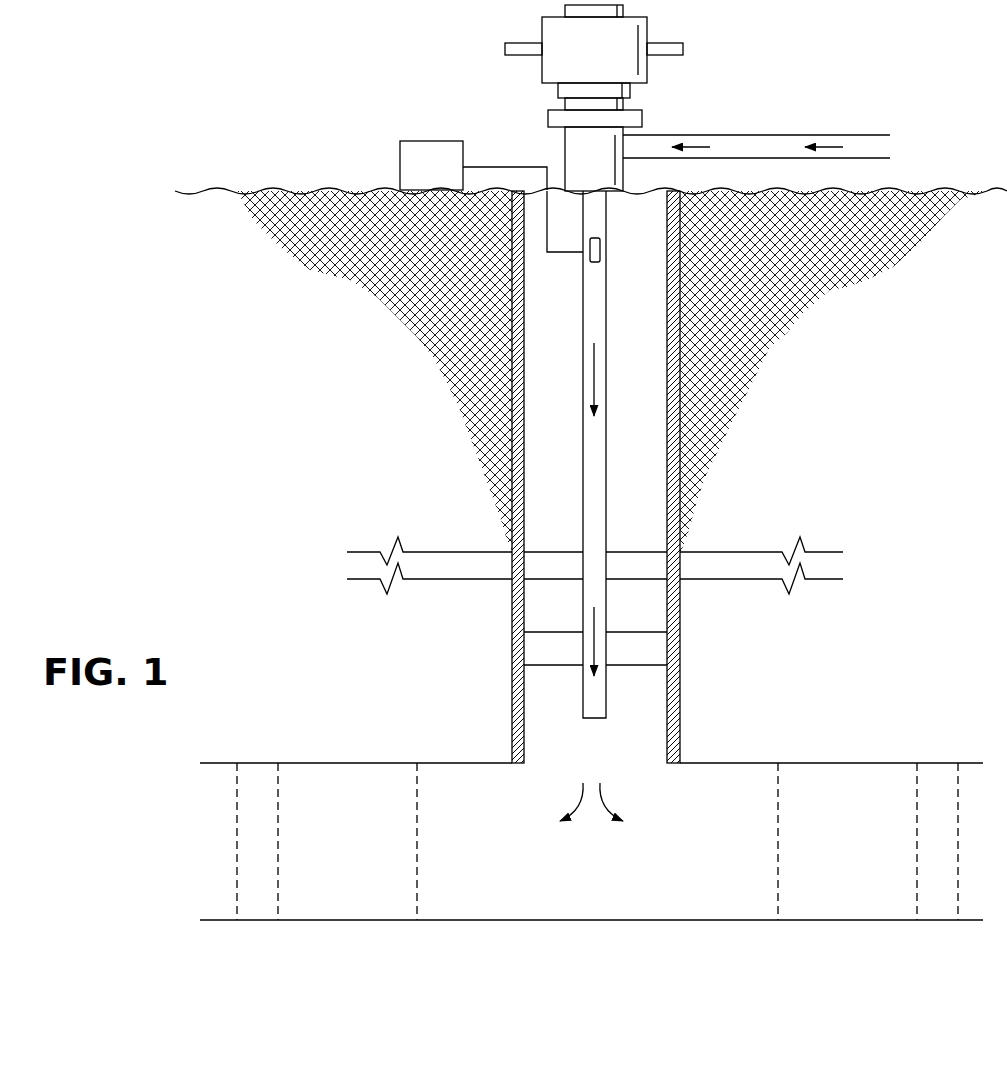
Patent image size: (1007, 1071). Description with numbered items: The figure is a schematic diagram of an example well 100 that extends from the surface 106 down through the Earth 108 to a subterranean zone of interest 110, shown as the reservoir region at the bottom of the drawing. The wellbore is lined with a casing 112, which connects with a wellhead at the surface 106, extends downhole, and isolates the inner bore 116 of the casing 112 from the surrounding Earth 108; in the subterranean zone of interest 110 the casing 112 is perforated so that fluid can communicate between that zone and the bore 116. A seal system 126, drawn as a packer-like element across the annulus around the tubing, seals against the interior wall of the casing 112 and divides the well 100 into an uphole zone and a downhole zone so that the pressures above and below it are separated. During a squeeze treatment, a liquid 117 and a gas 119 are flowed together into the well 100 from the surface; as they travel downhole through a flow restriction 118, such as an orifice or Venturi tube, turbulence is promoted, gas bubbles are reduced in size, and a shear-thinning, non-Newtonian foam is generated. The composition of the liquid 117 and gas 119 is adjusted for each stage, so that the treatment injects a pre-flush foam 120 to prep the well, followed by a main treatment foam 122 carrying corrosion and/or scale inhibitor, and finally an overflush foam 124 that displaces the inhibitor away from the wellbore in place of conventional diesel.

The well 100 is at (391, 91).
The surface 106 is at (212, 188).
The Earth 108 is at (386, 400).
The subterranean zone of interest 110 is at (799, 692).
The casing 112 is at (507, 538).
The inner bore of the casing 116 is at (650, 535).
The liquid 117 is at (690, 147).
The flow restriction 118 is at (600, 250).
The gas 119 is at (528, 166).
The pre-flush foam 120 is at (256, 776).
The main treatment foam 122 is at (367, 860).
The overflush foam 124 is at (616, 860).
The seal system 126 is at (520, 646).